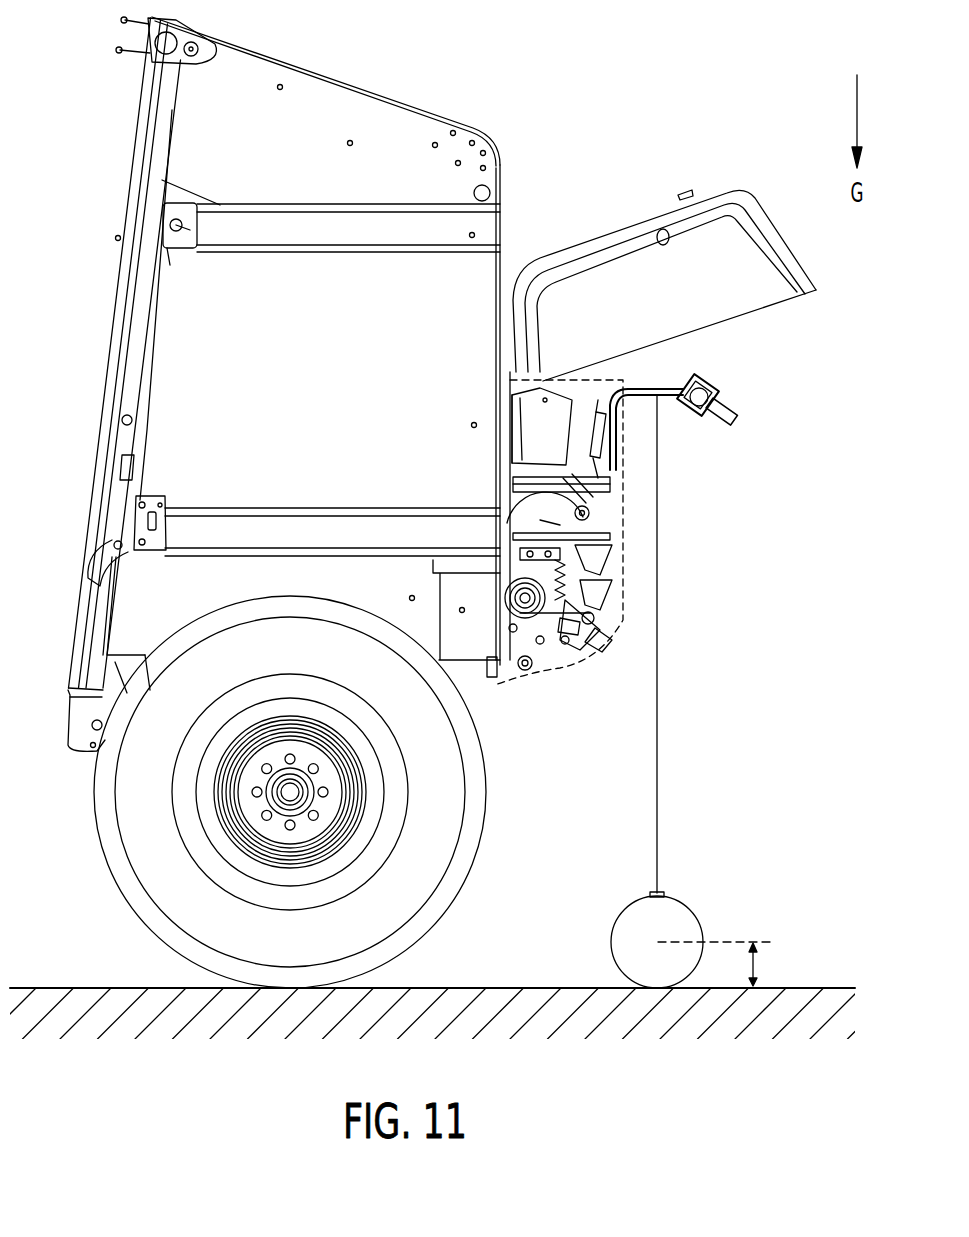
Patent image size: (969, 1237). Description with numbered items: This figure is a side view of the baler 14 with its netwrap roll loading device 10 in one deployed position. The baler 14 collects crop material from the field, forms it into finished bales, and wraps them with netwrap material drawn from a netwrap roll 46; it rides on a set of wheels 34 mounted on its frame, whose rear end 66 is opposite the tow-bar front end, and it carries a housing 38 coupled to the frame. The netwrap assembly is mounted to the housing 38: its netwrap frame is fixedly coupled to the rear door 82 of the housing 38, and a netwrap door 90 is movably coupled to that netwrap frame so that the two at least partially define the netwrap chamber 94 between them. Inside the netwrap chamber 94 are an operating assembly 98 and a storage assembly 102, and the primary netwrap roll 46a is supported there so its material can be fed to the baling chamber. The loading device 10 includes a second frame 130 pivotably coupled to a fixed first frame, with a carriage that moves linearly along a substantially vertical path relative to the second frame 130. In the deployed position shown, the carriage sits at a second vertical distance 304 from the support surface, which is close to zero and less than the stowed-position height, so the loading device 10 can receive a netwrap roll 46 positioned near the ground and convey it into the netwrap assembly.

The netwrap roll loading device 10 is at (630, 390).
The baler 14 is at (332, 100).
The wheels 34 is at (127, 865).
The housing 38 is at (231, 68).
The netwrap roll 46 is at (677, 920).
The primary netwrap roll 46a is at (527, 513).
The rear end 66 is at (422, 128).
The rear door 82 is at (502, 218).
The netwrap door 90 is at (733, 198).
The netwrap chamber 94 is at (532, 677).
The operating assembly 98 is at (582, 640).
The storage assembly 102 is at (557, 430).
The second frame 130 is at (668, 388).
The second vertical distance 304 is at (755, 967).